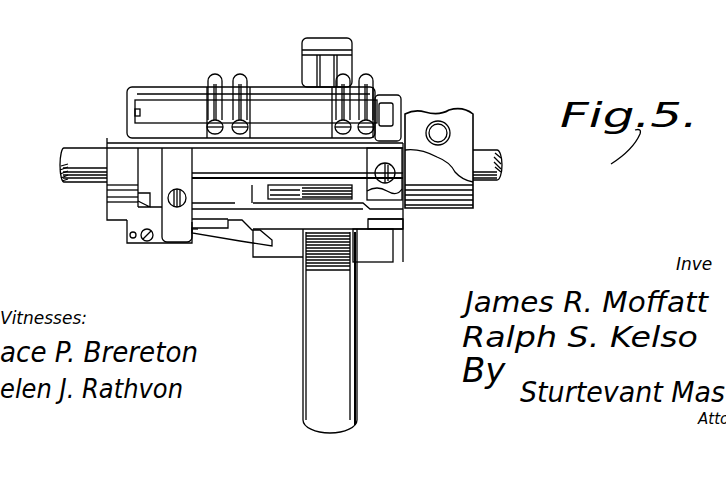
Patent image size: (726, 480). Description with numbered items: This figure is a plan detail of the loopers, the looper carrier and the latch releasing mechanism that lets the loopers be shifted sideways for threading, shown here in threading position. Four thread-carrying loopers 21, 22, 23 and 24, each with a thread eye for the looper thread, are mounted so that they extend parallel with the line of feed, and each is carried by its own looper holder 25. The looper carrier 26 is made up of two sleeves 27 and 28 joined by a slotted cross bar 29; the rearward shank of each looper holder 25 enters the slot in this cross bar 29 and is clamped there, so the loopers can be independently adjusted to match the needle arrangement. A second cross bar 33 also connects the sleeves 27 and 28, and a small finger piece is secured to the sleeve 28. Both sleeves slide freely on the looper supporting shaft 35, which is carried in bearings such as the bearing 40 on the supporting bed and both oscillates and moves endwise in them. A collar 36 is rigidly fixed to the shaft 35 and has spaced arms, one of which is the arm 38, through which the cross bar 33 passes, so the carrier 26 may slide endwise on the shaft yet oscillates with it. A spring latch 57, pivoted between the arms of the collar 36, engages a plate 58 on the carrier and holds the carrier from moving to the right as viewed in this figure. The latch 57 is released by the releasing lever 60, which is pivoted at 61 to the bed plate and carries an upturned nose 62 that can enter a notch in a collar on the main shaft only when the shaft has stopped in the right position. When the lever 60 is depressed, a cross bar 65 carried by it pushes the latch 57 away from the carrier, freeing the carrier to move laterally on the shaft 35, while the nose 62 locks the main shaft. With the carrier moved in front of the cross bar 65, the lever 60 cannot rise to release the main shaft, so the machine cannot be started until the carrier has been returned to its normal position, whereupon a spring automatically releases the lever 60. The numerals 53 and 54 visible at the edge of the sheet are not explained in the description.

The looper 21 is at (208, 107).
The looper 22 is at (242, 93).
The looper 23 is at (345, 100).
The looper 24 is at (379, 97).
The looper holder 25 is at (204, 132).
The looper carrier 26 is at (215, 204).
The sleeve 27 is at (125, 172).
The sleeve 28 is at (398, 205).
The slotted cross bar 29 is at (260, 87).
The second cross bar 33 is at (288, 189).
The looper supporting shaft 35 is at (80, 167).
The collar 36 is at (180, 173).
The arm 38 is at (137, 244).
The bearing 40 is at (440, 178).
The part 53 is at (610, 7).
The part 54 is at (510, 7).
The spring latch 57 is at (232, 238).
The plate 58 is at (385, 225).
The releasing lever 60 is at (324, 352).
The pivot 61 is at (312, 236).
The upturned nose 62 is at (335, 45).
The cross bar 65 is at (380, 236).